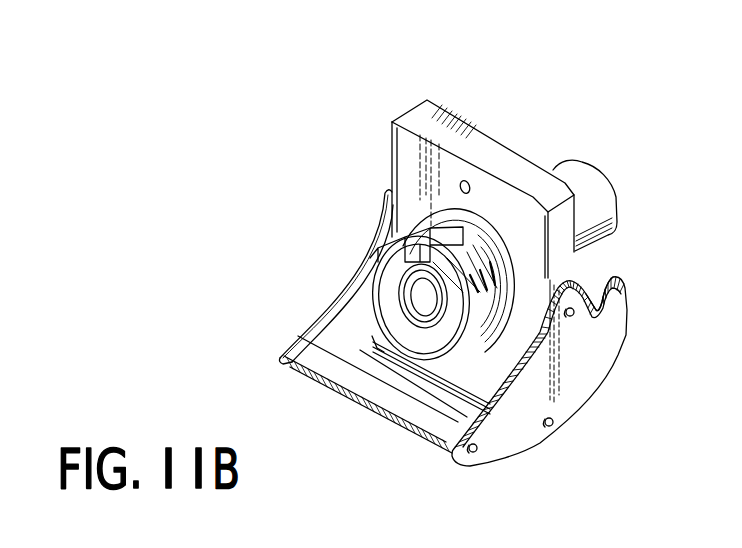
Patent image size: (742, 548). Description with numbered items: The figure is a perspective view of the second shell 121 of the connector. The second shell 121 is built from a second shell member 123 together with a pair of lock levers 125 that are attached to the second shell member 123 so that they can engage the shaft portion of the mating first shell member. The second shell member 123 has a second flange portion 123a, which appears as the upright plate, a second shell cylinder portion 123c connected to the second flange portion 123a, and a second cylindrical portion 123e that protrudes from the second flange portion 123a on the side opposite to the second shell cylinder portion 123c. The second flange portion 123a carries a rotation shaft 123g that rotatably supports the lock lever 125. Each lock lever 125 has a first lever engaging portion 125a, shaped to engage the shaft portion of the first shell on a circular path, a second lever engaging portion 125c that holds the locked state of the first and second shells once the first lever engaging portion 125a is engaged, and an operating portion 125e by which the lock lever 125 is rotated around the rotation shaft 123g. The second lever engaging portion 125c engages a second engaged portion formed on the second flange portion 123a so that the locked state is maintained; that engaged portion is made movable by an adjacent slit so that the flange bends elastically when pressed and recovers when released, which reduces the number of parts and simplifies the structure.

The second shell 121 is at (370, 94).
The second shell member 123 is at (439, 120).
The second flange portion 123a is at (488, 152).
The second shell cylinder portion 123c is at (380, 248).
The second cylindrical portion 123e is at (597, 197).
The rotation shaft 123g is at (573, 315).
The lock lever 125 is at (578, 410).
The first lever engaging portion 125a is at (620, 283).
The second lever engaging portion 125c is at (483, 383).
The operating portion 125e is at (317, 378).